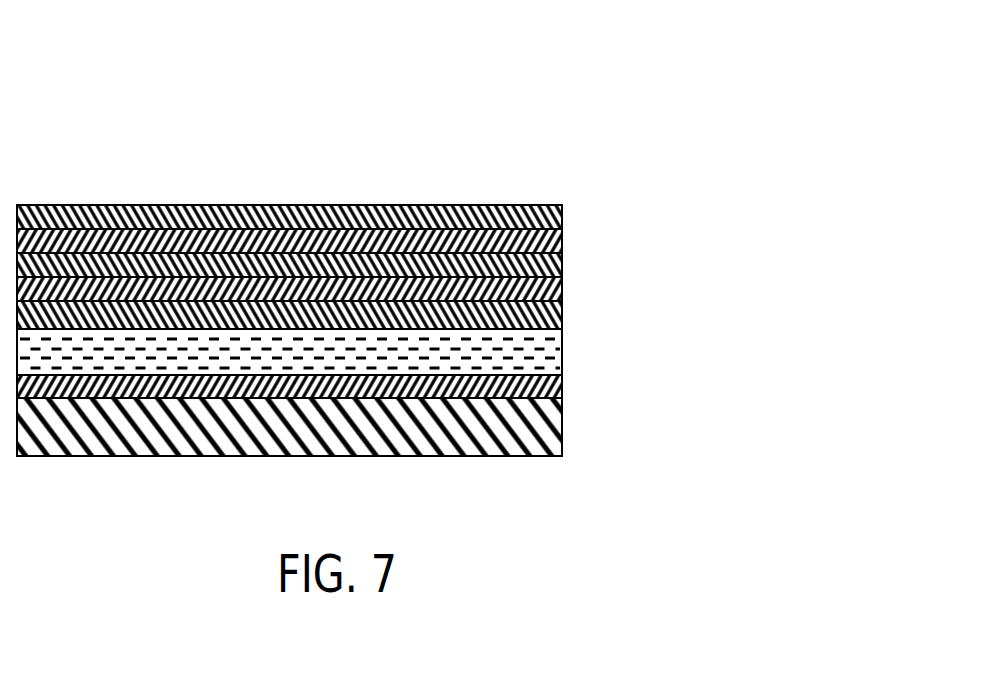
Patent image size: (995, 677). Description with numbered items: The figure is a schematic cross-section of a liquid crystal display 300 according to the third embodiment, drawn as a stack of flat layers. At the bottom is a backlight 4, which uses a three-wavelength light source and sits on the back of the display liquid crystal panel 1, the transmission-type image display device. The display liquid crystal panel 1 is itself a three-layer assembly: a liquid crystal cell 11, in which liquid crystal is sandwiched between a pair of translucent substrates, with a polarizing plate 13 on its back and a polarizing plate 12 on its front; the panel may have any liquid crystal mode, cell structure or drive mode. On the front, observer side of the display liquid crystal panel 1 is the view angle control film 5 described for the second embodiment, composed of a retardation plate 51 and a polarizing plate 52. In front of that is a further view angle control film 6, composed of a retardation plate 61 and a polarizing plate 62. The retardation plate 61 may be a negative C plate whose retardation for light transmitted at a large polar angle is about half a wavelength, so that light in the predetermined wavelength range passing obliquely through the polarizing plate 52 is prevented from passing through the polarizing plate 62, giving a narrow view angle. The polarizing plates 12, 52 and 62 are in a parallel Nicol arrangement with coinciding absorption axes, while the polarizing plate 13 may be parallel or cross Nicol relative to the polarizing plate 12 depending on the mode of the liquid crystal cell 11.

The liquid crystal display 300 is at (660, 57).
The view angle control film 6 is at (677, 163).
The polarizing plate 62 is at (565, 208).
The retardation plate 61 is at (565, 233).
The view angle control film 5 is at (677, 237).
The polarizing plate 52 is at (565, 257).
The retardation plate 51 is at (565, 285).
The display liquid crystal panel 1 is at (687, 322).
The polarizing plate 12 is at (565, 315).
The liquid crystal cell 11 is at (565, 357).
The polarizing plate 13 is at (565, 383).
The backlight 4 is at (565, 427).